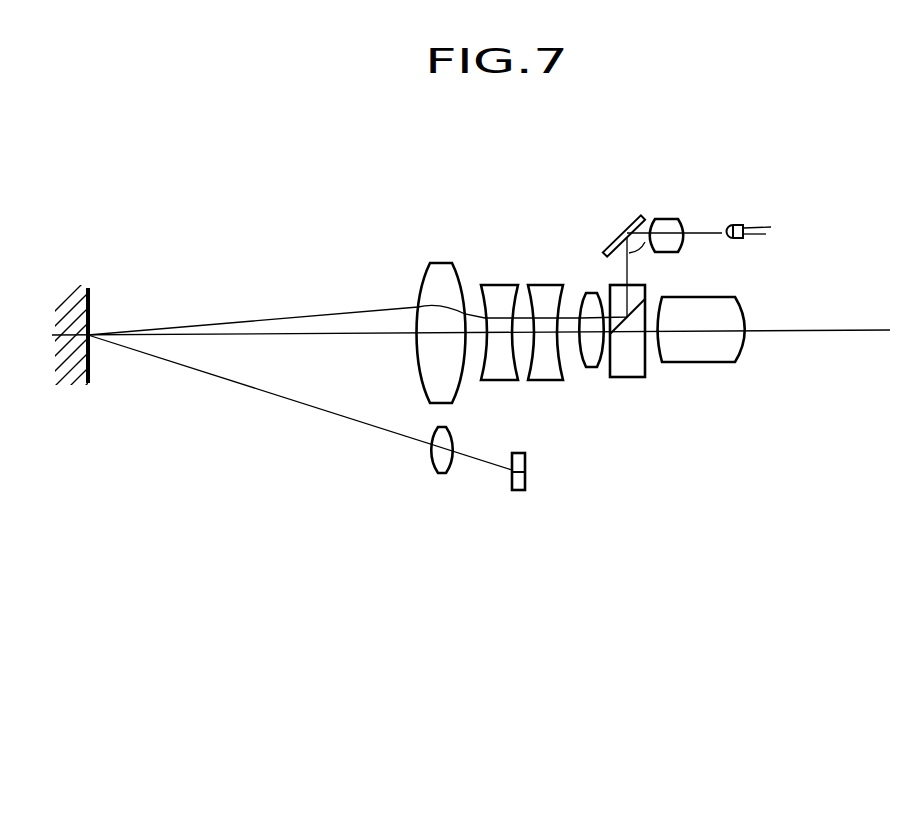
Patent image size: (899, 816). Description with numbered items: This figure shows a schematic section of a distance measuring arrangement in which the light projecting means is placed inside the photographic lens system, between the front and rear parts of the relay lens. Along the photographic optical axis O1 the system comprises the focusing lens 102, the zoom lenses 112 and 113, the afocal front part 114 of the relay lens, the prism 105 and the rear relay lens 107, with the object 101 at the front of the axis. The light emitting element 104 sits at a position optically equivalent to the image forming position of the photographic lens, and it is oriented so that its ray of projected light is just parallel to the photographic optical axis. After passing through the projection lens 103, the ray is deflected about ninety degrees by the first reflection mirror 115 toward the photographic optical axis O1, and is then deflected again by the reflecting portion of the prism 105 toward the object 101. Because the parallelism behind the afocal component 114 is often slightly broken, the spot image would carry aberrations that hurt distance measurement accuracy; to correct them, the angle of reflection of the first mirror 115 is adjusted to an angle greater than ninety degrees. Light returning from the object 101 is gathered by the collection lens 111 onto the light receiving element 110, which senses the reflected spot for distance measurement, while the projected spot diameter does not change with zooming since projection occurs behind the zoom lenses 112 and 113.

The object surface (wall) 101 is at (90, 309).
The focusing lens 102 is at (444, 268).
The zoom lens 112 is at (502, 290).
The concave lens 113 is at (550, 290).
The front part of relay lens 114 is at (592, 300).
The prism 105 is at (650, 318).
The first reflection mirror 115 is at (627, 214).
The projection lens 103 is at (665, 226).
The light emitting element 104 is at (734, 225).
The relay lens 107 is at (712, 363).
The collection lens 111 is at (438, 466).
The light receiving element 110 is at (527, 481).
The photographic optical axis O1 is at (471, 344).